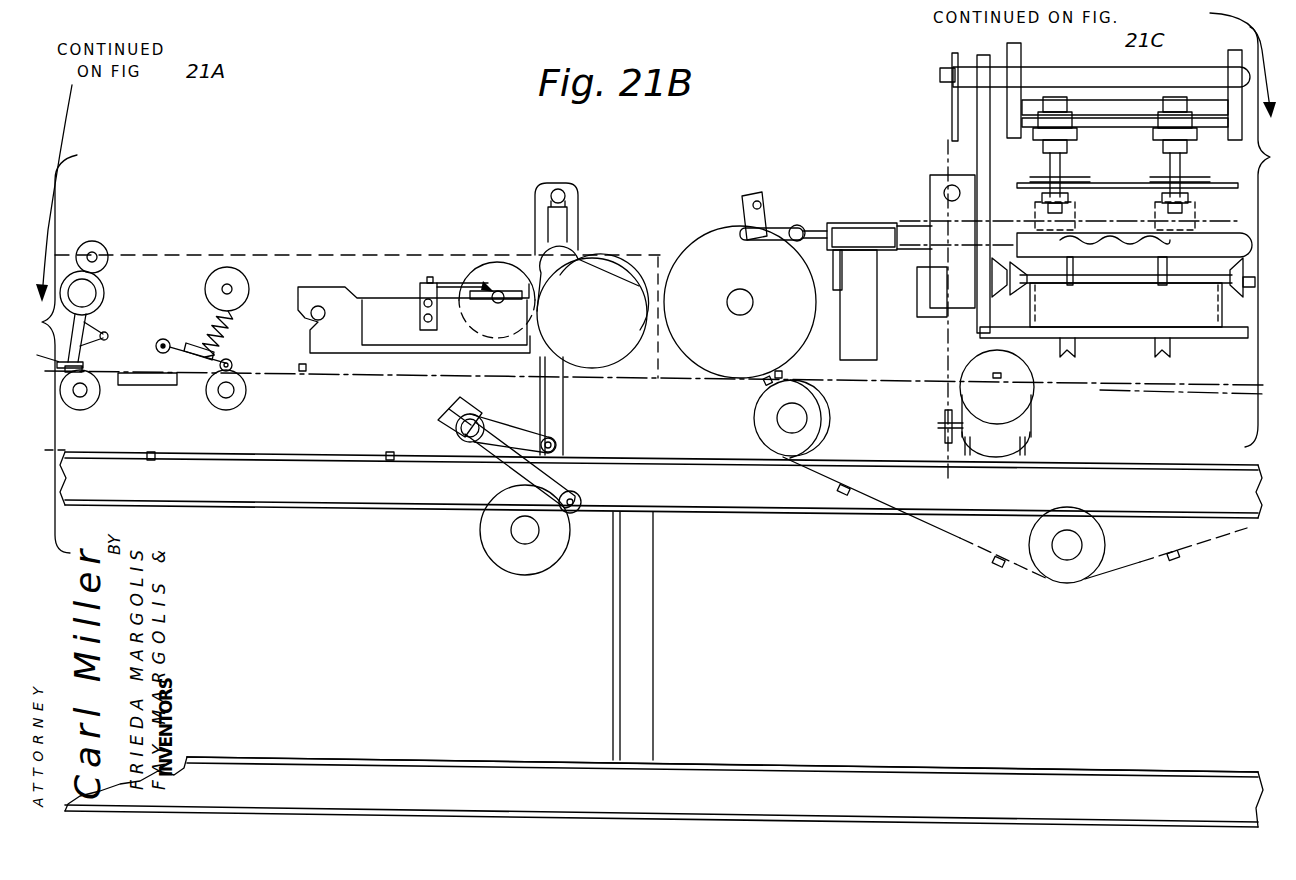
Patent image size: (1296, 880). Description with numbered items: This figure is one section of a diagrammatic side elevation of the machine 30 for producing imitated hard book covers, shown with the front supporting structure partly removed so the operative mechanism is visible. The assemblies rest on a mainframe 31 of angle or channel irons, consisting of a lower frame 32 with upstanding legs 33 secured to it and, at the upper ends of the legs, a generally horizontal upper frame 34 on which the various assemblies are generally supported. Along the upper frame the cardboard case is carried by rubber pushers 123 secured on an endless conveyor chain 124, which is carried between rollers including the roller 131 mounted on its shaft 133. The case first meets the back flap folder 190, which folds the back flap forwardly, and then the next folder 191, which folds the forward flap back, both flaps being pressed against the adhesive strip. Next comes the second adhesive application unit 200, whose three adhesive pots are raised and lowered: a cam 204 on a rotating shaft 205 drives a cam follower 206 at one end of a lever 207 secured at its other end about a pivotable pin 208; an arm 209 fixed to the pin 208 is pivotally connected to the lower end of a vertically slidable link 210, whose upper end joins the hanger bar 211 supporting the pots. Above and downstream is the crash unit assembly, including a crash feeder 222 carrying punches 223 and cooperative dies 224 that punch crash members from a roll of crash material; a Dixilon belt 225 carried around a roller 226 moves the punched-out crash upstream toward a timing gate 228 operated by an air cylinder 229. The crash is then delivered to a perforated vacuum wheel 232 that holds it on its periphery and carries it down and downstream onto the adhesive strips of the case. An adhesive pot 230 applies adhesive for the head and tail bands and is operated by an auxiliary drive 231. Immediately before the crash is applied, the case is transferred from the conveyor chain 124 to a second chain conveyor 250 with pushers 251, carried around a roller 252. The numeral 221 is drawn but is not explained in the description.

The machine 30 is at (414, 155).
The mainframe 31 is at (468, 754).
The lower frame 32 is at (336, 776).
The upstanding legs 33 is at (642, 598).
The upper frame 34 is at (252, 497).
The rubber pushers 123 is at (300, 372).
The endless conveyor chain 124 is at (376, 374).
The roller 131 is at (820, 411).
The shaft 133 is at (790, 418).
The back flap folder 190 is at (112, 234).
The folder 191 is at (238, 258).
The second adhesive application unit 200 is at (485, 226).
The cam 204 is at (550, 548).
The rotating shaft 205 is at (518, 538).
The cam follower 206 is at (583, 500).
The lever 207 is at (548, 480).
The pivotable pin 208 is at (472, 418).
The arm 209 is at (508, 427).
The vertically slidable link 210 is at (564, 405).
The hanger bar 211 is at (558, 183).
The lever assembly 221 is at (792, 194).
The crash feeder 222 is at (1036, 33).
The punches 223 is at (1064, 165).
The dies 224 is at (1070, 203).
The Dixilon belt 225 is at (818, 228).
The roller 226 is at (797, 242).
The timing gate 228 is at (747, 206).
The air cylinder 229 is at (856, 232).
The adhesive pot 230 is at (1132, 317).
The auxiliary drive 231 is at (1030, 398).
The perforated vacuum wheel 232 is at (738, 271).
The chain conveyor 250 is at (965, 548).
The pushers 251 is at (996, 567).
The roller 252 is at (800, 432).